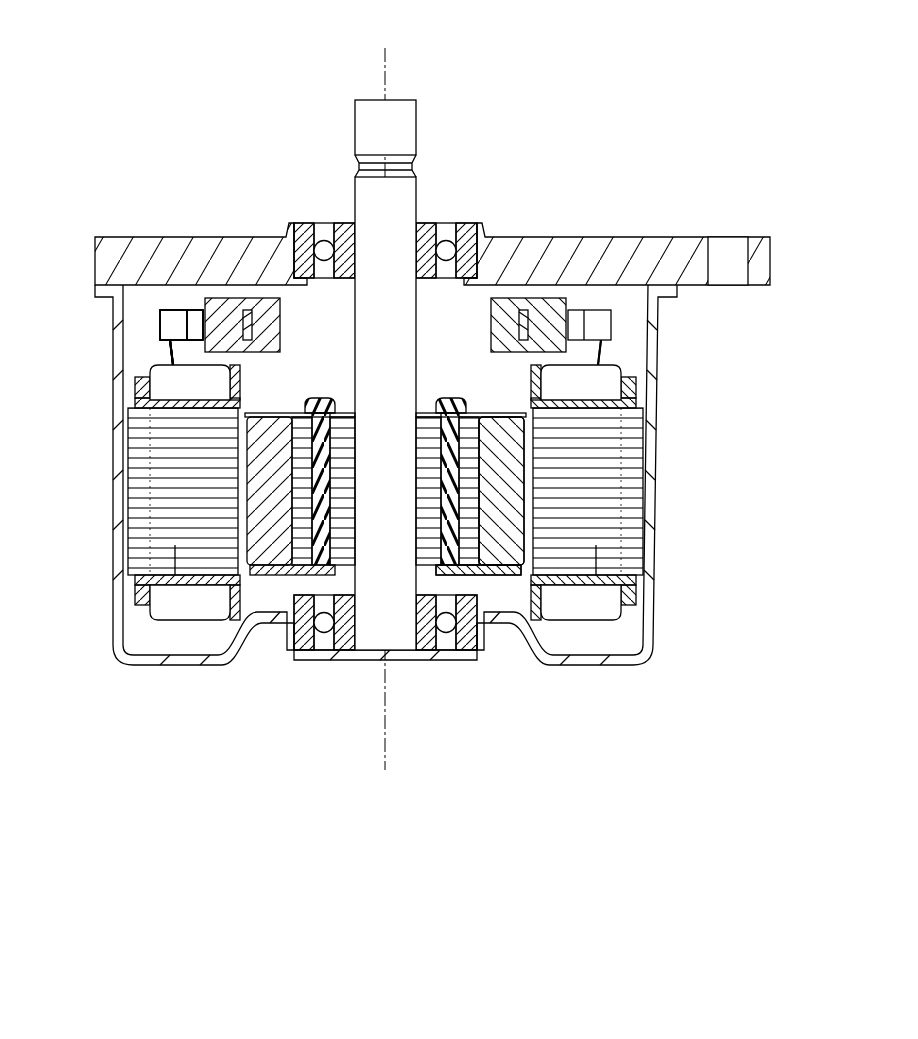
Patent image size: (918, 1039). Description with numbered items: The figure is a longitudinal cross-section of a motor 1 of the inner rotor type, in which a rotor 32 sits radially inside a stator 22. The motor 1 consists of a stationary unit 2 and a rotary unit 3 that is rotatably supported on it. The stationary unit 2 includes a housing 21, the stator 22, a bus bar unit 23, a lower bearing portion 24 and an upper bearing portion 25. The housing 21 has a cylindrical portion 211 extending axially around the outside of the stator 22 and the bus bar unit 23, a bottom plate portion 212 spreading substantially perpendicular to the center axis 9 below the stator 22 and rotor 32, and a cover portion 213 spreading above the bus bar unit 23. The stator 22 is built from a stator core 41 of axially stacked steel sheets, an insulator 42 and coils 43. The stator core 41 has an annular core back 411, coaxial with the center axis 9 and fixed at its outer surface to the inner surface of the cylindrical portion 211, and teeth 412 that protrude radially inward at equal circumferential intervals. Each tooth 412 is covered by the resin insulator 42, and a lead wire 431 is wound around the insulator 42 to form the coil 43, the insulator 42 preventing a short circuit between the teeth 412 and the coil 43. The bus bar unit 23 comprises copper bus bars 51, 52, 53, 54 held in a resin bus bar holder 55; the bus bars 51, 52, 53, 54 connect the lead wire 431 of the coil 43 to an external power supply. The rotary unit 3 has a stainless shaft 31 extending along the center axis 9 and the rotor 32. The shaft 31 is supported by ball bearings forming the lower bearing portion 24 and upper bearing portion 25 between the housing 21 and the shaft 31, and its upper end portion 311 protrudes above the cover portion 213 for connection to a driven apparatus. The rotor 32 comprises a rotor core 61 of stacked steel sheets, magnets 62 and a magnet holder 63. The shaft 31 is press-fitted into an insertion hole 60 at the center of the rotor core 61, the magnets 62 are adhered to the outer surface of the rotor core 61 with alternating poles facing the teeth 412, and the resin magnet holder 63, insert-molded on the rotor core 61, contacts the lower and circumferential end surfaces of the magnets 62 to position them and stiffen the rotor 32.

The motor 1 is at (268, 100).
The center axis 9 is at (385, 60).
The stationary unit 2 is at (661, 658).
The housing 21 is at (682, 326).
The cylindrical portion 211 is at (655, 450).
The bottom plate portion 212 is at (558, 660).
The cover portion 213 is at (577, 256).
The stator 22 is at (272, 750).
The bus bar unit 23 is at (118, 172).
The lower bearing portion 24 is at (470, 642).
The upper bearing portion 25 is at (463, 238).
The rotary unit 3 is at (323, 382).
The shaft 31 is at (375, 628).
The upper end portion 311 is at (400, 120).
The rotor 32 is at (725, 518).
The stator core 41 is at (180, 713).
The core back 411 is at (130, 557).
The teeth 412 is at (177, 545).
The insulator 42 is at (240, 598).
The coil 43 is at (196, 605).
The lead wire 431 is at (173, 354).
The bus bar 51 is at (197, 323).
The bus bar 52 is at (181, 337).
The bus bar 53 is at (181, 337).
The bus bar 54 is at (181, 337).
The bus bar holder 55 is at (228, 318).
The insertion hole 60 is at (406, 537).
The rotor core 61 is at (480, 487).
The magnet 62 is at (506, 527).
The magnet holder 63 is at (492, 573).